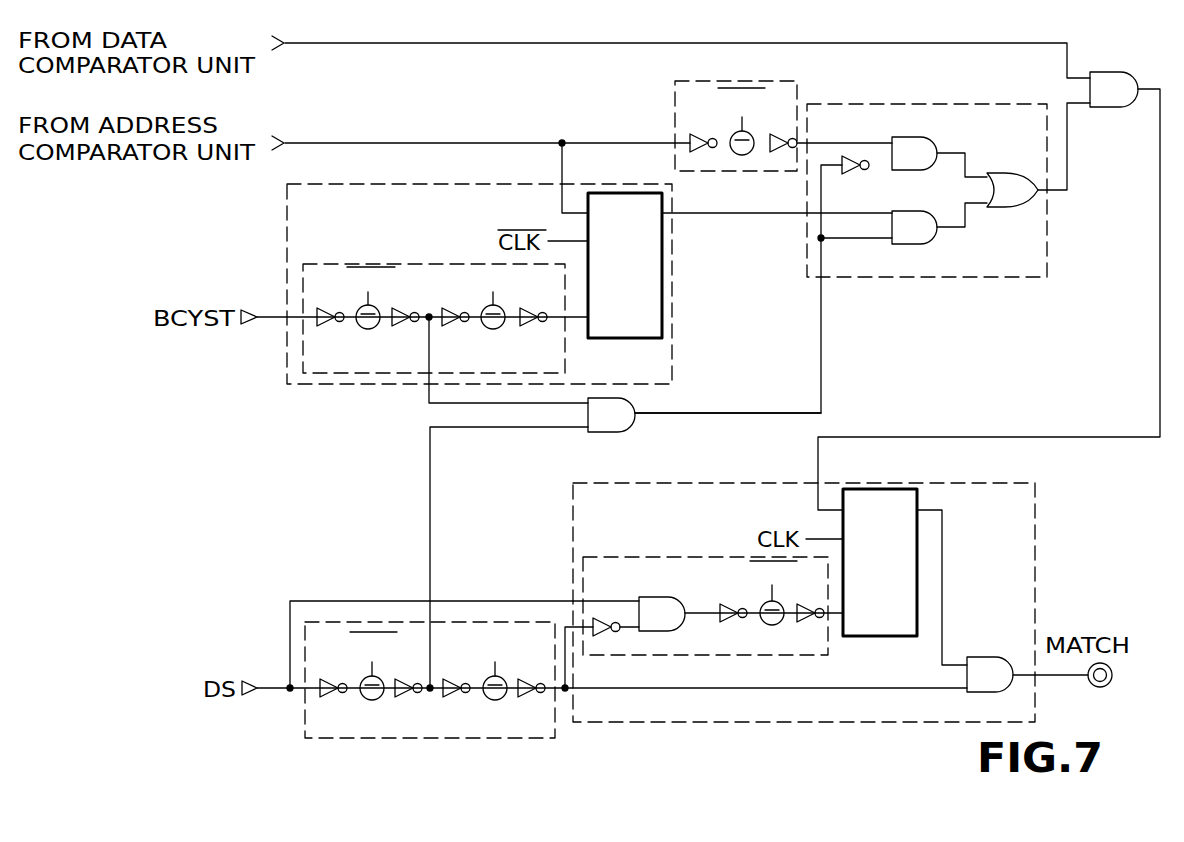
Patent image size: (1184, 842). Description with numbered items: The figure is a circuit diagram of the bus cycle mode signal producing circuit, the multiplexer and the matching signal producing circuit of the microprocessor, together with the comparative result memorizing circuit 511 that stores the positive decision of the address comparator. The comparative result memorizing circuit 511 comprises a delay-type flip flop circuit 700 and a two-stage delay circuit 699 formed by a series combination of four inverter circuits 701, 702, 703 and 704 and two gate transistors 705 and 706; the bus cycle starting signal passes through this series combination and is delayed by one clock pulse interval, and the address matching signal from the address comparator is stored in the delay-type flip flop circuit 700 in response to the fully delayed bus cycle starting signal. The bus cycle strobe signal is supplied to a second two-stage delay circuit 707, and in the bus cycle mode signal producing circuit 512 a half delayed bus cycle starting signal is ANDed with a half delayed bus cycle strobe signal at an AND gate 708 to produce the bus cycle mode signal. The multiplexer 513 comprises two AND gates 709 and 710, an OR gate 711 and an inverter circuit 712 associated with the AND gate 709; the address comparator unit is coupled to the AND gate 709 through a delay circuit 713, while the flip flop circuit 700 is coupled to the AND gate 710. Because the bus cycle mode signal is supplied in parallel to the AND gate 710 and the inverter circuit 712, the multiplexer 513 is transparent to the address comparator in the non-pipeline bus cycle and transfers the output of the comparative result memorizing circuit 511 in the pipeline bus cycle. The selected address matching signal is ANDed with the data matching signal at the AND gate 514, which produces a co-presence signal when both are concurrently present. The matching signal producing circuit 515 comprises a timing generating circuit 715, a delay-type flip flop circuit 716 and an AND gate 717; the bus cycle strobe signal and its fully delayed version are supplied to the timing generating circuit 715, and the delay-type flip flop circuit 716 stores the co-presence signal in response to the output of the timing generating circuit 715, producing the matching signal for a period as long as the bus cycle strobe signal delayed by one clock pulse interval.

The comparative result memorizing circuit 511 is at (285, 222).
The bus cycle mode signal producing circuit 512 is at (654, 406).
The multiplexer 513 is at (932, 104).
The AND gate 514 is at (1108, 72).
The matching signal producing circuit 515 is at (1035, 590).
The two-stage delay circuit 699 is at (448, 244).
The delay-type flip flop circuit 700 is at (662, 300).
The inverter circuit 701 is at (326, 328).
The inverter circuit 702 is at (404, 308).
The inverter circuit 703 is at (450, 328).
The inverter circuit 704 is at (542, 324).
The gate transistor 705 is at (372, 330).
The gate transistor 706 is at (493, 330).
The two-stage delay circuit 707 is at (462, 738).
The AND gate 708 is at (600, 432).
The AND gate 709 is at (930, 140).
The AND gate 710 is at (925, 244).
The OR gate 711 is at (1010, 207).
The inverter circuit 712 is at (852, 174).
The delay circuit 713 is at (764, 79).
The timing generating circuit 715 is at (668, 555).
The delay-type flip flop circuit 716 is at (870, 636).
The AND gate 717 is at (985, 657).